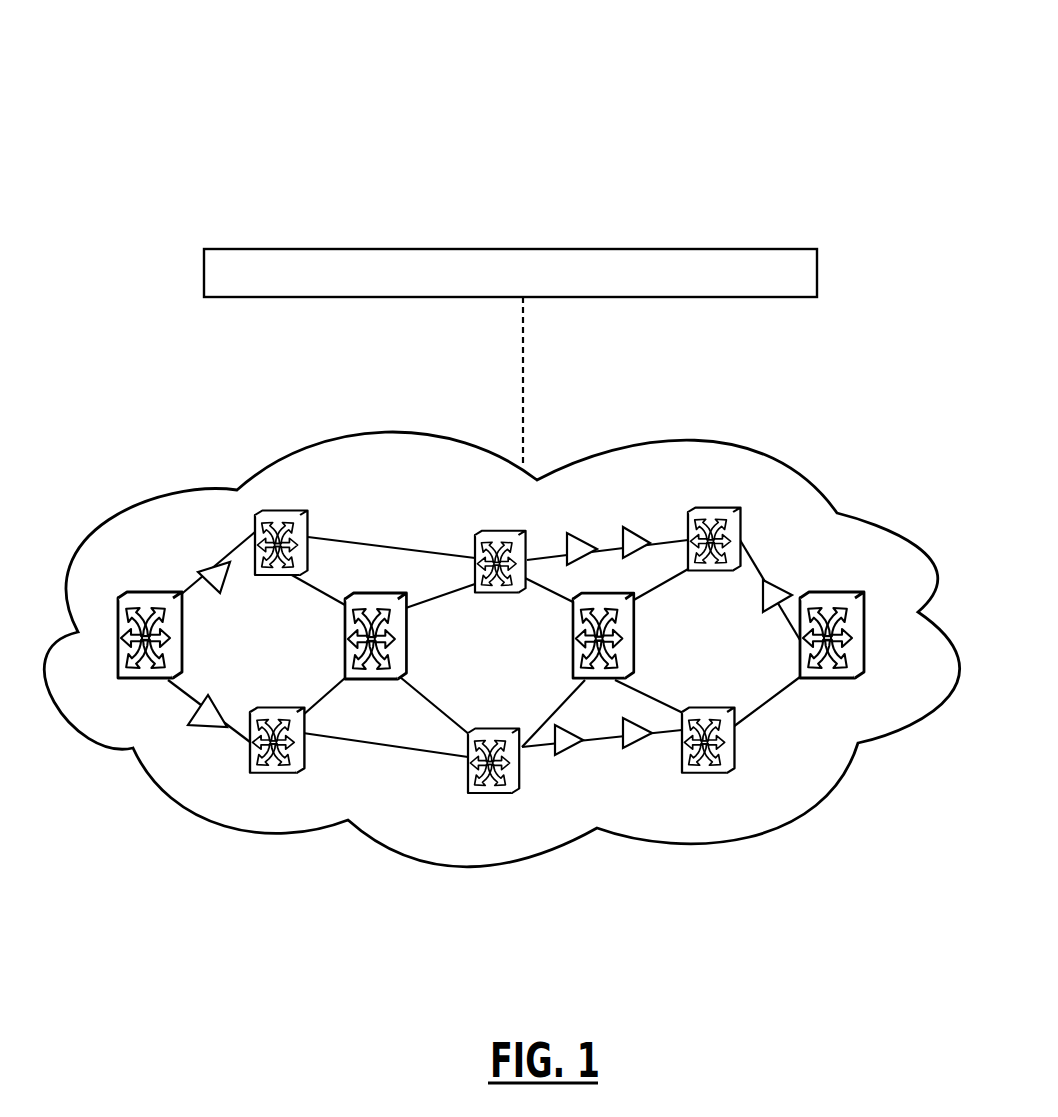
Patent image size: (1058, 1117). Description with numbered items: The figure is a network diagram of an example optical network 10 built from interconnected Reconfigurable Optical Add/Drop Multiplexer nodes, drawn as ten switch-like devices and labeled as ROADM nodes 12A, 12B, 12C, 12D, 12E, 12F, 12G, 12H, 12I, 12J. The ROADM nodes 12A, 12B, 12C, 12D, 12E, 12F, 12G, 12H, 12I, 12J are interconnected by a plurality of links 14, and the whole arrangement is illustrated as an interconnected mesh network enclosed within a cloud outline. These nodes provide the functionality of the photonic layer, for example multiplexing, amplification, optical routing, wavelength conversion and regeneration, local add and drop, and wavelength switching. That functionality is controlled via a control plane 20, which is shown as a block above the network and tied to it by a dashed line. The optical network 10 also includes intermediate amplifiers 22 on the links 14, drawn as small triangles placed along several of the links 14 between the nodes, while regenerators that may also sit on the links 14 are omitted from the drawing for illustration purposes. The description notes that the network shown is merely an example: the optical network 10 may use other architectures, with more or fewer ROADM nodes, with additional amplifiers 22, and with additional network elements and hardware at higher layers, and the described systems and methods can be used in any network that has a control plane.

The optical network 10 is at (753, 88).
The ROADM node 12A is at (153, 597).
The ROADM node 12B is at (377, 679).
The ROADM node 12C is at (597, 679).
The ROADM node 12D is at (825, 679).
The ROADM node 12E is at (287, 514).
The ROADM node 12F is at (495, 593).
The ROADM node 12G is at (710, 572).
The ROADM node 12H is at (280, 708).
The ROADM node 12I is at (495, 731).
The ROADM node 12J is at (713, 709).
The link 14 is at (392, 542).
The control plane 20 is at (819, 253).
The intermediate amplifier 22 is at (575, 533).